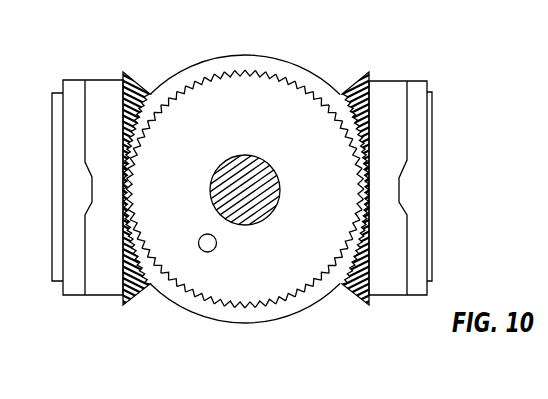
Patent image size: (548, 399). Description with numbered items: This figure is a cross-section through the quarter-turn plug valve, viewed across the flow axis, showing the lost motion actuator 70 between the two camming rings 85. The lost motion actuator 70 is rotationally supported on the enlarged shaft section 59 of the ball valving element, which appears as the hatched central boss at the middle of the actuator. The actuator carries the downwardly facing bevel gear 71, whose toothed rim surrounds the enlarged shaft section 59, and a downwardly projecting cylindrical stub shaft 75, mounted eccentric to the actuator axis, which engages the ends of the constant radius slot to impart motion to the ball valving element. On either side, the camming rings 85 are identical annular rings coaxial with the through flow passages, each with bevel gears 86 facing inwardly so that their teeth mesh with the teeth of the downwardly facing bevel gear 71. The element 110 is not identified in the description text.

The enlarged shaft section 59 is at (250, 208).
The lost motion actuator 70 is at (252, 298).
The downwardly facing bevel gear 71 is at (250, 72).
The cylindrical stub shaft 75 is at (205, 252).
The camming rings 85 is at (101, 80).
The bevel gears 86 is at (142, 82).
The right housing 110 is at (421, 81).